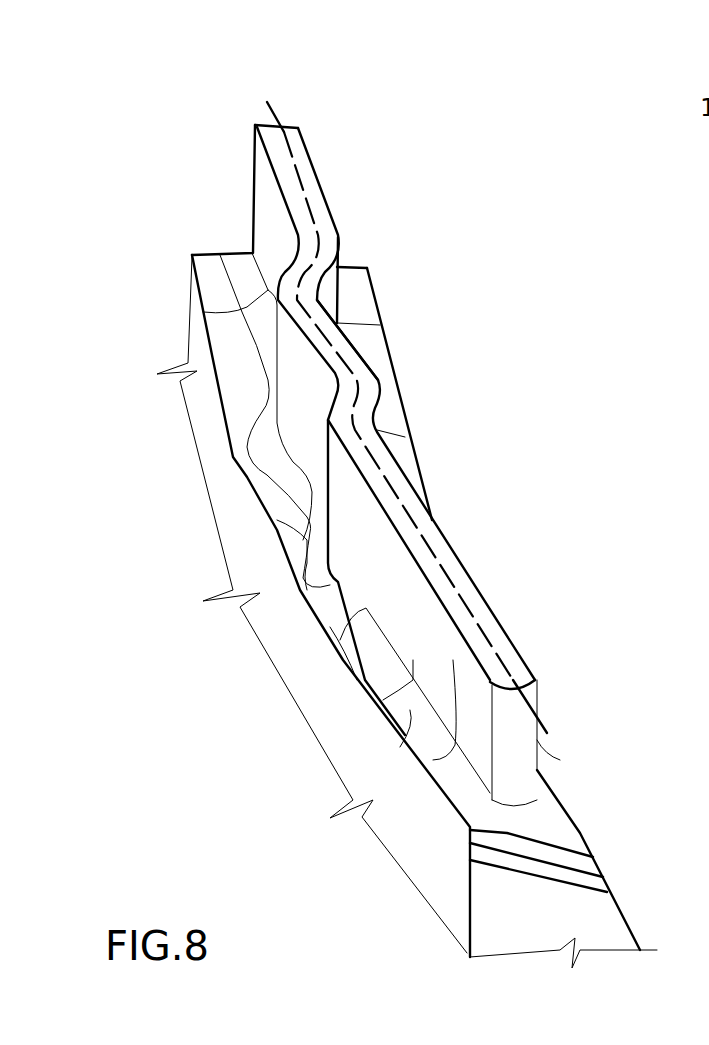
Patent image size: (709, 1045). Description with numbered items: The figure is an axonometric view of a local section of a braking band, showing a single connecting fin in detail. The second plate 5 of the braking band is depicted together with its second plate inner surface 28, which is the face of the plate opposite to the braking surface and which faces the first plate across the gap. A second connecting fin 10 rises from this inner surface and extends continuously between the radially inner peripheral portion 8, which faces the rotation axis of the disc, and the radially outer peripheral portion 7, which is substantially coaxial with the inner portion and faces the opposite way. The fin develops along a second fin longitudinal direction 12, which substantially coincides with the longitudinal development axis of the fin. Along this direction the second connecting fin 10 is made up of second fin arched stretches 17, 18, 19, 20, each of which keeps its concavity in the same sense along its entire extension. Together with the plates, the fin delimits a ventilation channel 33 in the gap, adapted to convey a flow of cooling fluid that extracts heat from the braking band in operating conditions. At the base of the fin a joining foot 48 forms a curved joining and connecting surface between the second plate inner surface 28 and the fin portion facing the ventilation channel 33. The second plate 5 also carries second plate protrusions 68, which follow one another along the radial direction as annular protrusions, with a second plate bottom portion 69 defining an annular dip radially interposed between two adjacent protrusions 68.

The second plate 5 is at (467, 945).
The radially outer peripheral portion 7 is at (192, 255).
The radially inner peripheral portion 8 is at (523, 877).
The second connecting fin 10 is at (310, 184).
The second fin longitudinal direction 12 is at (270, 110).
The second fin arched stretch 17 is at (327, 427).
The second fin arched stretch 18 is at (367, 382).
The second fin arched stretch 19 is at (287, 293).
The second fin arched stretch 20 is at (340, 237).
The second plate inner surface 28 is at (577, 837).
The ventilation channel 33 is at (363, 317).
The joining foot 48 is at (413, 838).
The second plate protrusion 68 is at (307, 537).
The second plate bottom portion 69 is at (243, 447).